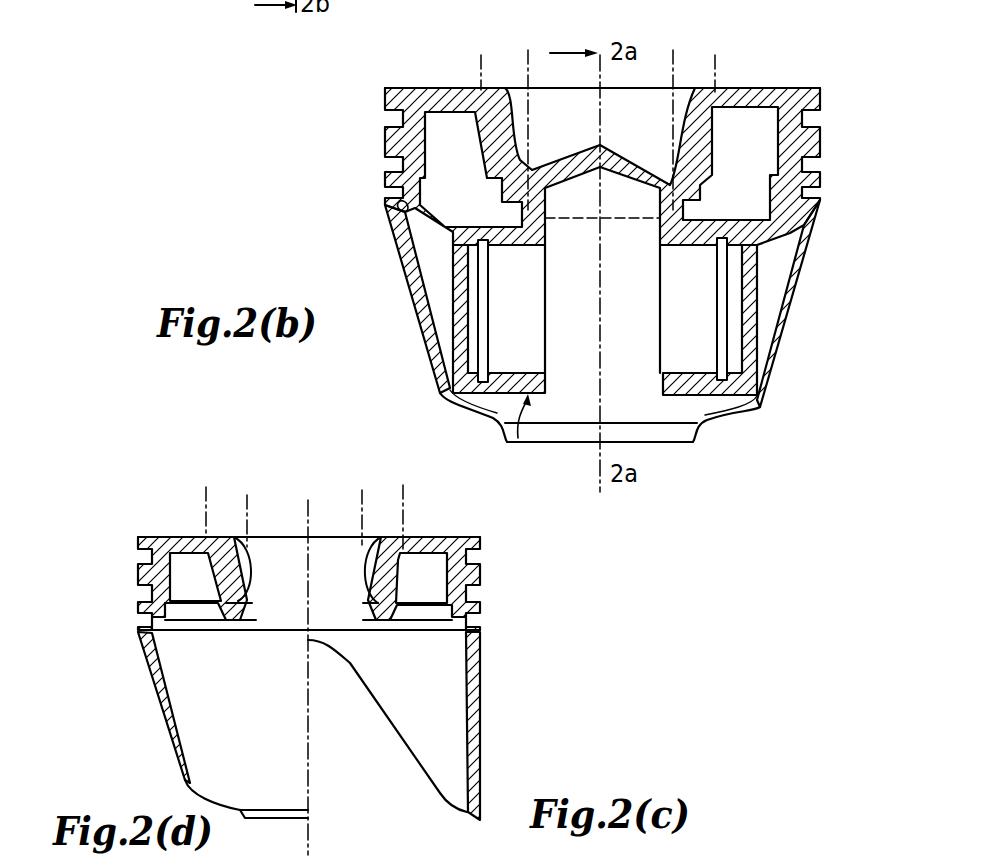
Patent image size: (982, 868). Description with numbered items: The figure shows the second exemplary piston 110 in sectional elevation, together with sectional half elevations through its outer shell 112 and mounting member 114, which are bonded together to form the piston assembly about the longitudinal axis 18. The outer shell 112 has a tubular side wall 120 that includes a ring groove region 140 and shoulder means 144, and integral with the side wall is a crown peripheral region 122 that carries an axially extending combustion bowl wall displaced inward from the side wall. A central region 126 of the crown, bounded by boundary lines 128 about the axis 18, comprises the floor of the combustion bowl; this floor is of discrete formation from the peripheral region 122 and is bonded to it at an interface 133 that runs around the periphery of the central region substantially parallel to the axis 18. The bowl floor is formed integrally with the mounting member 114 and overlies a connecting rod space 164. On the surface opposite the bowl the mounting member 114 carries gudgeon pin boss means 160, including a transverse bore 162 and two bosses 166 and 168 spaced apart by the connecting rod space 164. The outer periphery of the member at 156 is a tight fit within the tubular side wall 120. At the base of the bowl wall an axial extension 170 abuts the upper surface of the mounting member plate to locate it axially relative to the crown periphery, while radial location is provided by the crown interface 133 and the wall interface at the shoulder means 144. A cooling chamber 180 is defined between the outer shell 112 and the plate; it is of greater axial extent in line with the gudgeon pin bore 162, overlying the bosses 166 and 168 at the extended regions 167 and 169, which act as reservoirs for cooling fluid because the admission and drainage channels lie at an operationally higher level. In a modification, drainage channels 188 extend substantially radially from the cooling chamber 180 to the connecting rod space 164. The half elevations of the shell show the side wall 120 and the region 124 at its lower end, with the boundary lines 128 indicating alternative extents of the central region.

In FIG. 2B, the longitudinal axis 18 is at (604, 490).
In FIG. 2B, the piston 110 is at (300, 262).
In FIG. 2B, the outer shell 112 is at (228, 0).
In FIG. 2B, the mounting member 114 is at (223, 32).
In FIG. 2B, the tubular side wall 120 is at (420, 290).
In FIG. 2D, the tubular side wall 120 is at (165, 688).
In FIG. 2C, the tubular side wall 120 is at (466, 730).
In FIG. 2B, the crown peripheral region 122 is at (800, 86).
In FIG. 2D, the crown peripheral region 122 is at (158, 535).
In FIG. 2C, the crown peripheral region 122 is at (455, 537).
In FIG. 2D, the skirt bottom 124 is at (413, 838).
In FIG. 2B, the central region 126 is at (552, 127).
In FIG. 2B, the boundary lines 128 is at (732, 50).
In FIG. 2D, the boundary lines 128 is at (206, 505).
In FIG. 2C, the boundary lines 128 is at (362, 507).
In FIG. 2B, the interface 133 is at (740, 215).
In FIG. 2B, the ring groove region 140 is at (368, 168).
In FIG. 2D, the ring groove region 140 is at (120, 608).
In FIG. 2B, the shoulder means 144 is at (395, 204).
In FIG. 2C, the shoulder means 144 is at (492, 630).
In FIG. 2B, the outer periphery of the mounting member 156 is at (392, 229).
In FIG. 2B, the gudgeon pin boss means 160 is at (588, 470).
In FIG. 2B, the transverse bore 162 is at (500, 348).
In FIG. 2B, the connecting rod space 164 is at (609, 200).
In FIG. 2B, the boss 166 is at (700, 388).
In FIG. 2B, the extended region of cooling chamber 167 is at (783, 258).
In FIG. 2B, the boss 168 is at (497, 385).
In FIG. 2B, the extended region of cooling chamber 169 is at (496, 243).
In FIG. 2B, the axial extension 170 is at (492, 162).
In FIG. 2C, the axial extension 170 is at (378, 627).
In FIG. 2B, the cooling chamber 180 is at (752, 132).
In FIG. 2B, the drainage channels 188 is at (543, 250).